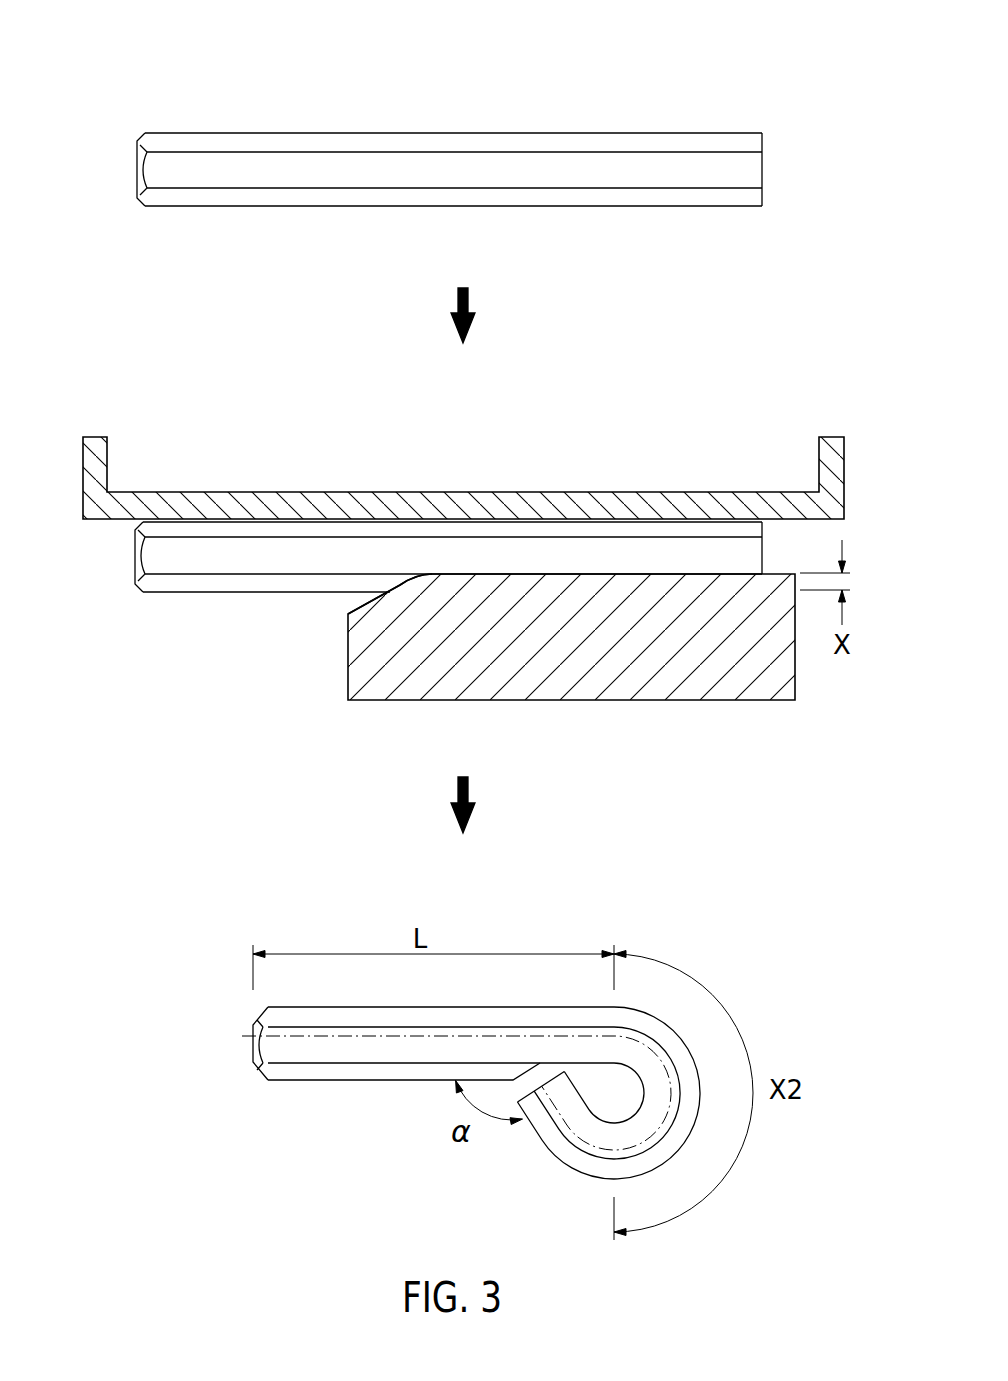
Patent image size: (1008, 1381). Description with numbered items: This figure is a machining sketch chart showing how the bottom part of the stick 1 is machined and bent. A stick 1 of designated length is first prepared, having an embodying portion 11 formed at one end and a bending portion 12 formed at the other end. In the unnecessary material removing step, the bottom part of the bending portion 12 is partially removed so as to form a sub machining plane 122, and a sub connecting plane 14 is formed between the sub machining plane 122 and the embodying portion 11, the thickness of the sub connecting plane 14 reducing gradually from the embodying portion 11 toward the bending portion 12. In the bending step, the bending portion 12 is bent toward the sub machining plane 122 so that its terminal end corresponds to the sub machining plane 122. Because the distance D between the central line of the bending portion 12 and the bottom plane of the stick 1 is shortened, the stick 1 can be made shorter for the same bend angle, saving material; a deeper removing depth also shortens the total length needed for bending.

The stick 1 is at (444, 607).
The embodying portion 11 is at (172, 195).
The bending portion 12 is at (718, 197).
The sub connecting plane 14 is at (410, 580).
The sub machining plane 122 is at (571, 673).
The distance between central line of bending portion and bottom plane of stick D is at (397, 1037).